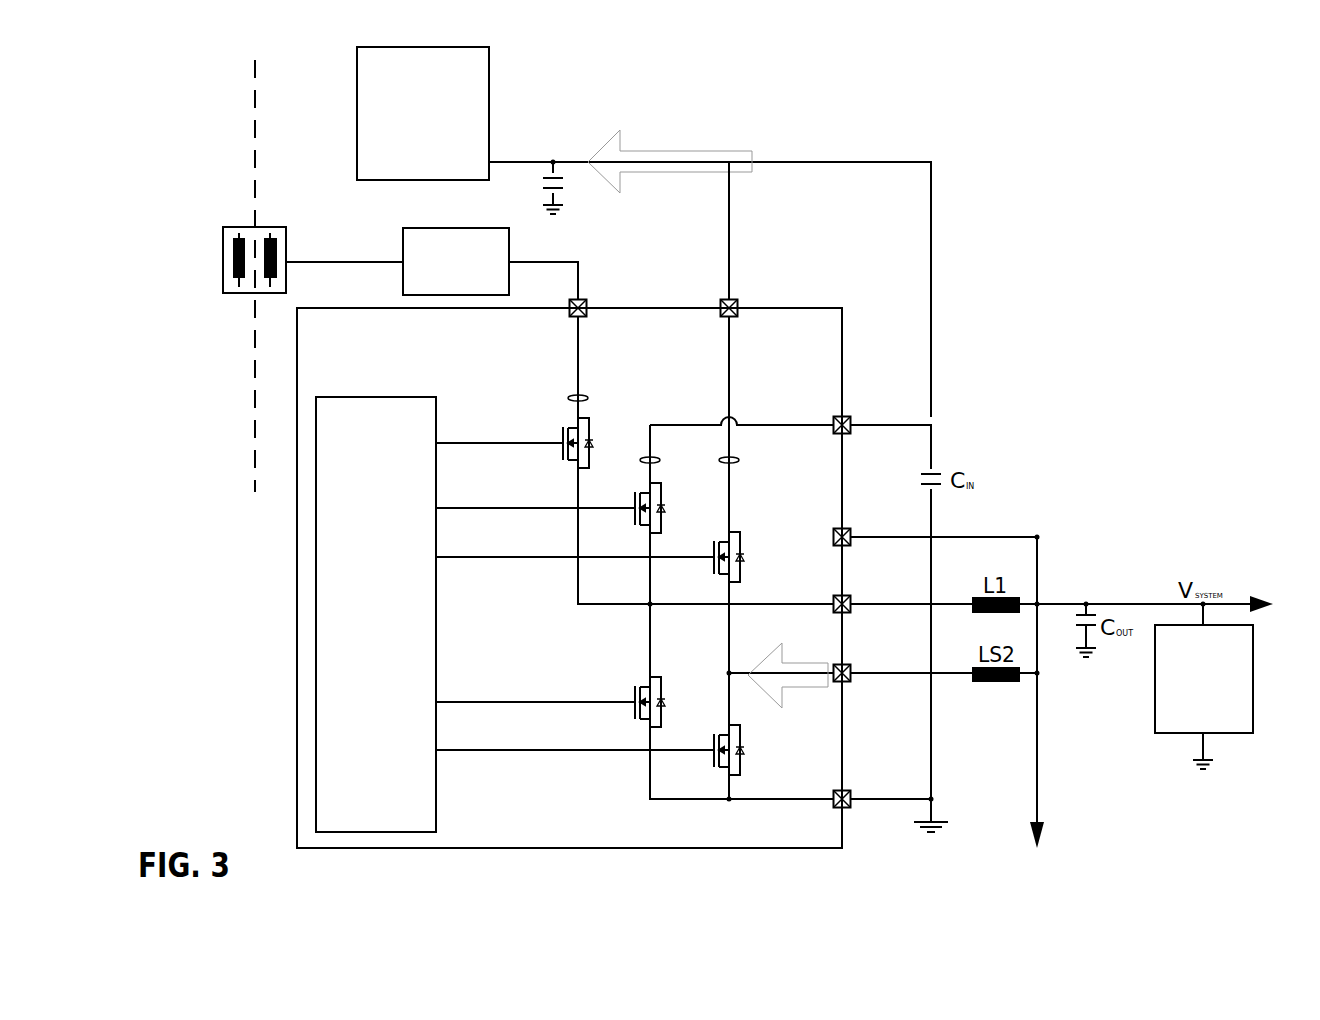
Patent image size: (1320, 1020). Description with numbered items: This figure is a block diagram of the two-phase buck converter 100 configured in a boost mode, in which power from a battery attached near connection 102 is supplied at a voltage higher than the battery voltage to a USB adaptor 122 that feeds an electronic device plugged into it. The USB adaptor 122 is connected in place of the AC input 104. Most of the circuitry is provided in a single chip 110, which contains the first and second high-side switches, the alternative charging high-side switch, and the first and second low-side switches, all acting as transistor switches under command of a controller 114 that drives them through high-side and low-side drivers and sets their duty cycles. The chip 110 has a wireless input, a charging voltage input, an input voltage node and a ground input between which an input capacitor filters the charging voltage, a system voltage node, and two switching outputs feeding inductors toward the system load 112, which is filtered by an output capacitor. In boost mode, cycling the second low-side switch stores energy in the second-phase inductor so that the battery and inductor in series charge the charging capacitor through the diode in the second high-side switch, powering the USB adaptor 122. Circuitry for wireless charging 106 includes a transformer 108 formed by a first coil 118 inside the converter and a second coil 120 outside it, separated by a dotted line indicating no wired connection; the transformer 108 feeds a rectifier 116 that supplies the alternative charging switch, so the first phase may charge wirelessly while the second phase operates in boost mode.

The two-phase buck converter 100 is at (974, 239).
The connection 102 is at (1094, 835).
The AC input 104 is at (284, 276).
The circuitry for wireless charging 106 is at (378, 239).
The transformer 108 is at (224, 292).
The chip 110 is at (772, 307).
The system load 112 is at (1222, 716).
The controller 114 is at (393, 638).
The rectifier 116 is at (473, 285).
The first coil 118 is at (272, 222).
The second coil 120 is at (237, 214).
The USB adaptor 122 is at (423, 113).